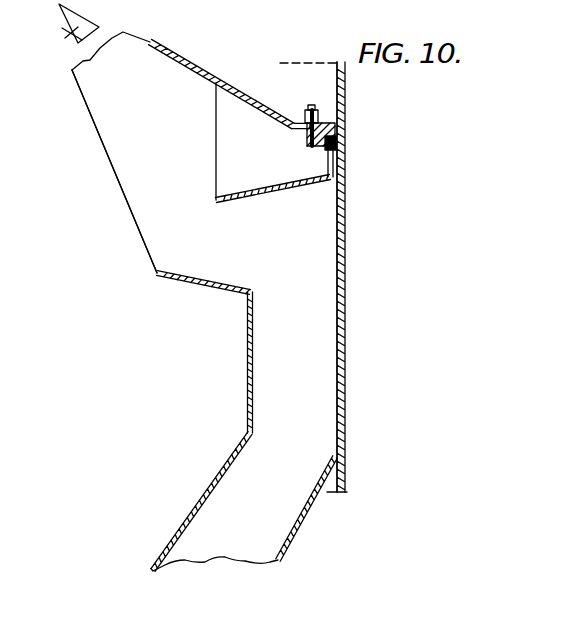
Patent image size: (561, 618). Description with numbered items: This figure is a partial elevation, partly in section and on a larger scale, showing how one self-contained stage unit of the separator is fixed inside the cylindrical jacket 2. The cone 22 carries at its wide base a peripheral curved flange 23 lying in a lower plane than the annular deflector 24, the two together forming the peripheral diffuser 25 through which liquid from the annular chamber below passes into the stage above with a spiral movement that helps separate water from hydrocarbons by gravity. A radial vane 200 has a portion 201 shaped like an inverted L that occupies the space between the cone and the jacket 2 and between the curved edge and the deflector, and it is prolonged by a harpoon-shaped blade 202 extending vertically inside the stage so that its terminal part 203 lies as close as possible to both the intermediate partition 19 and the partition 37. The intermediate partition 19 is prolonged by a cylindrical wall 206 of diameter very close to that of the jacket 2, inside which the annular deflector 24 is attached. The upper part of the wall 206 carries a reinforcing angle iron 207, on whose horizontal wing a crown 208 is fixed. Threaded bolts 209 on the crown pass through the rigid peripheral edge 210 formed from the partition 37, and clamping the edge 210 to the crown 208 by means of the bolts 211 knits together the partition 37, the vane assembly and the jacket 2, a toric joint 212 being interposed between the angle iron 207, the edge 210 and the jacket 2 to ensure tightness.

The jacket 2 is at (348, 353).
The intermediate partition 19 is at (297, 532).
The cone 22 is at (175, 547).
The peripheral curved flange 23 is at (206, 287).
The annular deflector 24 is at (283, 188).
The peripheral diffuser 25 is at (118, 181).
The intermediate partition 37 is at (223, 56).
The vane 200 is at (237, 478).
The portion 201 is at (267, 317).
The blade 202 is at (102, 113).
The terminal part 203 is at (55, 27).
The cylindrical wall 206 is at (336, 265).
The reinforcing angle iron 207 is at (330, 160).
The crown 208 is at (303, 134).
The threaded bolts 209 is at (326, 127).
The rigid peripheral edge 210 is at (300, 119).
The bolts 211 is at (318, 110).
The wedge 212 is at (337, 139).